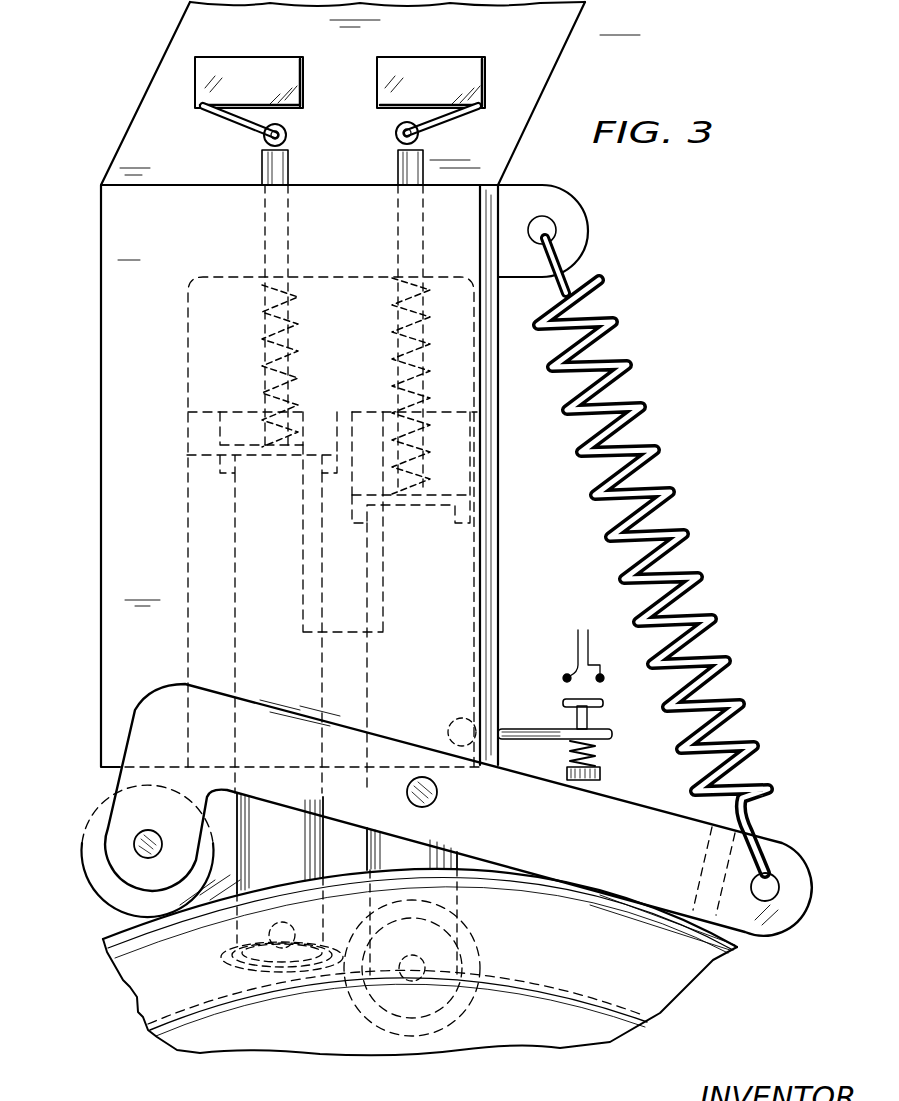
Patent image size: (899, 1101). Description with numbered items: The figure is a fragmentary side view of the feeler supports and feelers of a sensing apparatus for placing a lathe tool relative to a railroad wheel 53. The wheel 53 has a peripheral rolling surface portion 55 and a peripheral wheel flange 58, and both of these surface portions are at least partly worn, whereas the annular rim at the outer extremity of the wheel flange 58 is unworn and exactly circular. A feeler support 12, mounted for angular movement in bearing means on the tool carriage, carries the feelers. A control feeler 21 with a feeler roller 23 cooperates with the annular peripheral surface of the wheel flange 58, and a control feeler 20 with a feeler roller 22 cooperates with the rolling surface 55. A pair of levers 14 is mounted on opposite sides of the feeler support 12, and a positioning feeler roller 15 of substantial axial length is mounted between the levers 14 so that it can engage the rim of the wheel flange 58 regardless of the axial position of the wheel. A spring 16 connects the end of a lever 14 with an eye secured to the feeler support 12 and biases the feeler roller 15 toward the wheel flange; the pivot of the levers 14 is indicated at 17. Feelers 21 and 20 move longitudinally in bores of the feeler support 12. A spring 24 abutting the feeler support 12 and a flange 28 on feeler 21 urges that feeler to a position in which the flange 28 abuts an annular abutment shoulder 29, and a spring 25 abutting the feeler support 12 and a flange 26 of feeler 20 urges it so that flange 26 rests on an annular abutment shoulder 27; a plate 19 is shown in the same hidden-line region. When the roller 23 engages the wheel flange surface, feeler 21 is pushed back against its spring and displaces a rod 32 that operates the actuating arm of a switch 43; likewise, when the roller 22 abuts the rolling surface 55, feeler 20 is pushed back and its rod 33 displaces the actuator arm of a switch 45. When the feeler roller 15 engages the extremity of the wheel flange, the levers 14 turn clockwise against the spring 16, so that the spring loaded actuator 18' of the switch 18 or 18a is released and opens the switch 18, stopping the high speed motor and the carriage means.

The feeler support 12 is at (101, 257).
The lever 14 is at (644, 826).
The feeler roller 15 is at (105, 805).
The spring 16 is at (600, 326).
The pivot pin 17 is at (448, 727).
The switch 18 is at (555, 682).
The switch 18a is at (596, 656).
The spring loaded actuator 18' is at (614, 753).
The mounting plate 19 is at (468, 436).
The control feeler 20 is at (452, 866).
The control feeler 21 is at (295, 840).
The feeler roller 22 is at (478, 946).
The feeler roller 23 is at (228, 958).
The spring 24 is at (262, 322).
The spring 25 is at (392, 337).
The flange 26 is at (490, 480).
The annular abutment shoulder 27 is at (490, 515).
The flange 28 is at (232, 440).
The annular abutment shoulder 29 is at (187, 455).
The rod 32 is at (262, 160).
The rod 33 is at (397, 158).
The switch 43 is at (248, 63).
The switch 45 is at (448, 62).
The railroad wheel 53 is at (290, 1030).
The peripheral rolling surface portion 55 is at (626, 1012).
The peripheral wheel flange 58 is at (733, 947).